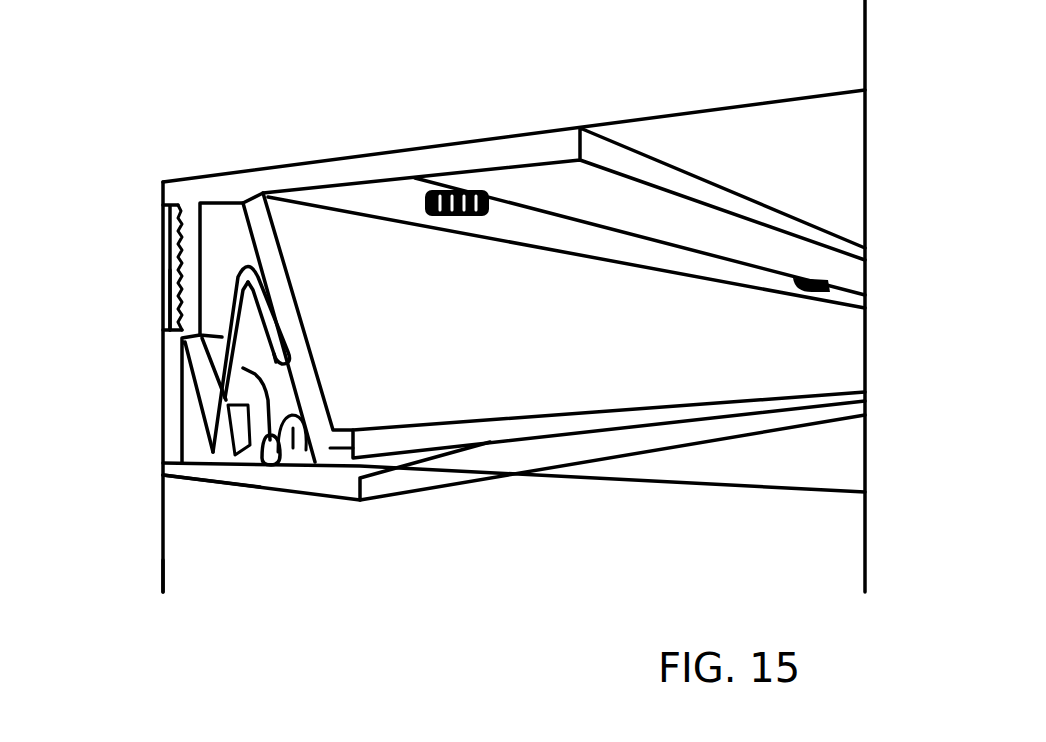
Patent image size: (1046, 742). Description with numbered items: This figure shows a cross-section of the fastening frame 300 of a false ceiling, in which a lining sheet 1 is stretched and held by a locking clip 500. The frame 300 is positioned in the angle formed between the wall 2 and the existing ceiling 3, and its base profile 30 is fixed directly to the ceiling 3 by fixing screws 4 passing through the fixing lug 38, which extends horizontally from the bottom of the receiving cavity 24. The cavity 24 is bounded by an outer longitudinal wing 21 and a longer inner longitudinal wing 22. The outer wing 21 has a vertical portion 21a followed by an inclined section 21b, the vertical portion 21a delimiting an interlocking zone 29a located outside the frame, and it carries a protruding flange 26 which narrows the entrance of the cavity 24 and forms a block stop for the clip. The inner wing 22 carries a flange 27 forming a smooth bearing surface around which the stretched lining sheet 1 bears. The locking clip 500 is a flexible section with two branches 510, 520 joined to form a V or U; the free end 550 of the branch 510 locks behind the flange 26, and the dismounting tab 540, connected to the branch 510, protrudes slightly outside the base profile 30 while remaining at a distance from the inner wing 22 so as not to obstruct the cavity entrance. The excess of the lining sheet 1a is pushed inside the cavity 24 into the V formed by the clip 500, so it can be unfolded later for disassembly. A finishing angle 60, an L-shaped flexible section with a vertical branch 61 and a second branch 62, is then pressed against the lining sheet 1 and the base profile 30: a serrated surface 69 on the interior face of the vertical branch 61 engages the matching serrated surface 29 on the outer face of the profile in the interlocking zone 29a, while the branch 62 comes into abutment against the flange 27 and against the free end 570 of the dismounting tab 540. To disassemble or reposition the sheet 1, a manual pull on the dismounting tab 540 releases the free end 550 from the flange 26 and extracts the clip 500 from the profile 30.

The lining sheet 1 is at (828, 478).
The excess of the lining sheet 1a is at (314, 452).
The wall 2 is at (138, 596).
The ceiling 3 is at (770, 62).
The fixing screw 4 is at (468, 205).
The outer longitudinal wing 21 is at (172, 297).
The vertical portion 21a is at (176, 228).
The inclined section 21b is at (196, 386).
The inner longitudinal wing 22 is at (650, 346).
The receiving cavity 24 is at (222, 237).
The flange 26 is at (207, 470).
The flange 27 is at (482, 426).
The notched or serrated surface 29 is at (130, 288).
The interlocking zone 29a is at (166, 212).
The base profile 30 is at (264, 180).
The fixing lug 38 is at (407, 178).
The finishing angle 60 is at (378, 510).
The vertical branch 61 is at (176, 431).
The branch 62 is at (224, 480).
The notched or serrated surface 69 is at (180, 262).
The fastening frame 300 is at (158, 168).
The locking clip 500 is at (283, 304).
The branch 510 is at (235, 345).
The branch 520 is at (276, 332).
The dismounting tab 540 is at (256, 445).
The free end 550 is at (234, 426).
The free end 570 is at (284, 470).